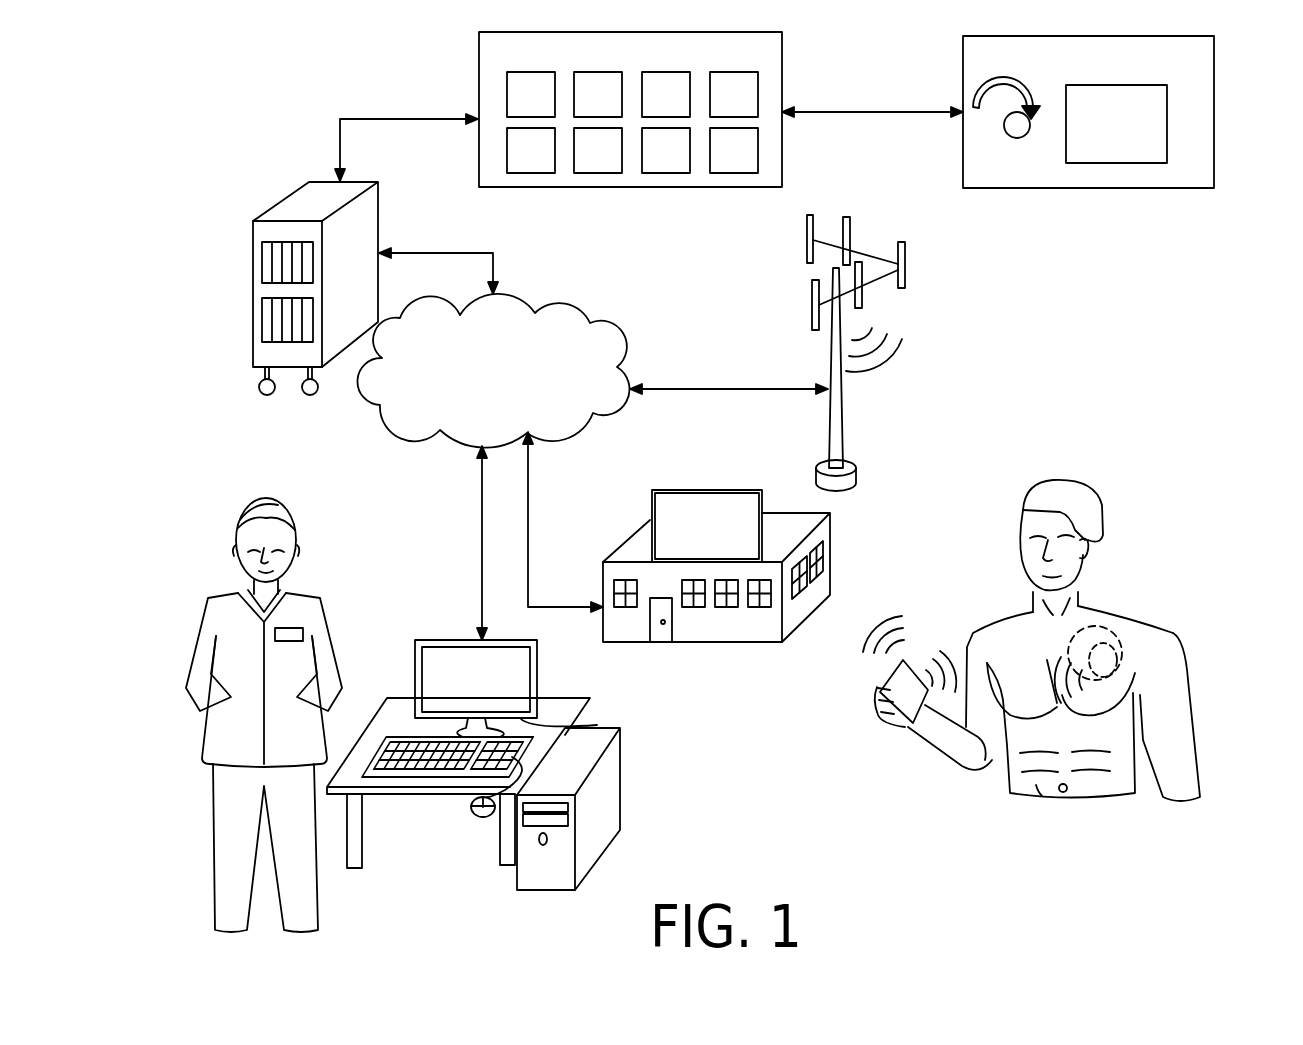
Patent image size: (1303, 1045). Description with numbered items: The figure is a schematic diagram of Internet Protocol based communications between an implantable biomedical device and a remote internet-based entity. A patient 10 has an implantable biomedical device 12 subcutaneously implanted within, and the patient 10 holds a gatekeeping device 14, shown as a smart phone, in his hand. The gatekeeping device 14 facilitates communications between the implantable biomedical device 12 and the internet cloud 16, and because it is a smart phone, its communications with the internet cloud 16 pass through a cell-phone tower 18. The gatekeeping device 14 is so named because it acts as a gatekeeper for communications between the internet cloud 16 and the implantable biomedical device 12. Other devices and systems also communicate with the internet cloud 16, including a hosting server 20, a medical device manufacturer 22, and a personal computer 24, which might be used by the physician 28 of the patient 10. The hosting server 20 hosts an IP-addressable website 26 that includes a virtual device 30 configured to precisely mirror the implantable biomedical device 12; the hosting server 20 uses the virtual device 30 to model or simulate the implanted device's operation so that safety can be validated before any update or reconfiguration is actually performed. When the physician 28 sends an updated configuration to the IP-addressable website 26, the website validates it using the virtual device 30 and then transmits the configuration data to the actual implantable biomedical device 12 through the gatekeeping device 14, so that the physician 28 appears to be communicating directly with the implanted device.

The patient 10 is at (1165, 585).
The implantable biomedical device 12 is at (1125, 672).
The gatekeeping device 14 is at (876, 689).
The internet cloud 16 is at (510, 384).
The cell-phone tower 18 is at (918, 303).
The hosting server 20 is at (253, 297).
The medical device manufacturer 22 is at (786, 500).
The personal computer 24 is at (620, 707).
The IP-addressable website 26 is at (748, 62).
The physician 28 is at (188, 525).
The virtual device 30 is at (1214, 112).